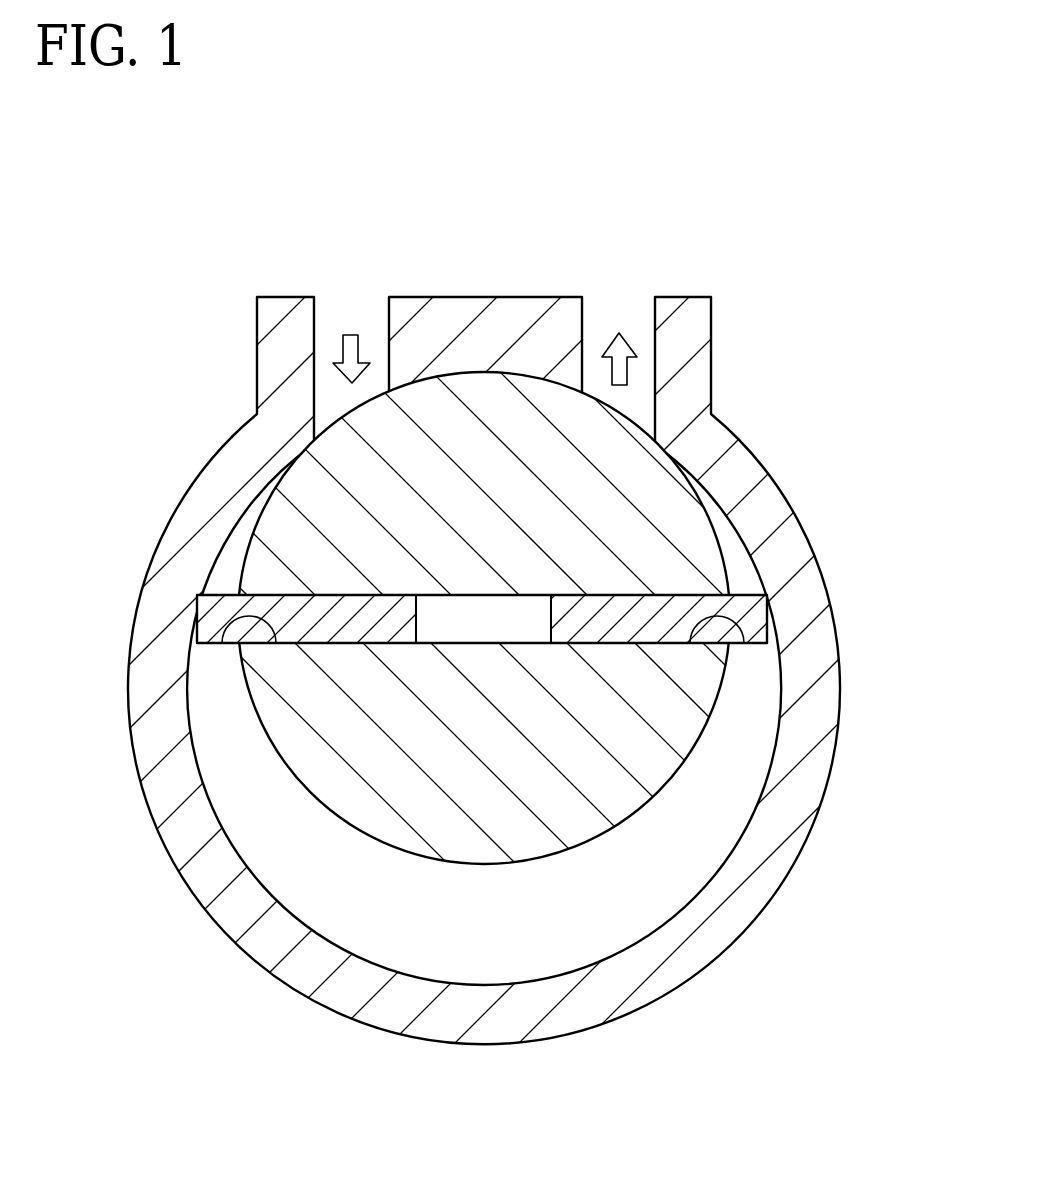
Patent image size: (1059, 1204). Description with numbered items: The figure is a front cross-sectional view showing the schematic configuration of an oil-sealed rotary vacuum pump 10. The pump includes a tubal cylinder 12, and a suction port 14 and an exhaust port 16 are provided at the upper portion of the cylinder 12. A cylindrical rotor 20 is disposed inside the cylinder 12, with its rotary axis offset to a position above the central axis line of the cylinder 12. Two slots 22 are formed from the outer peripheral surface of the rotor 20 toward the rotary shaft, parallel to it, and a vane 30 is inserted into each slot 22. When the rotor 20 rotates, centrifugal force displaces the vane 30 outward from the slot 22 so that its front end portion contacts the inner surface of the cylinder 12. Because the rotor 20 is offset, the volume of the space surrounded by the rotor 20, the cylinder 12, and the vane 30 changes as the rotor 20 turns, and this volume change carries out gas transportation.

The oil-sealed rotary vacuum pump 10 is at (733, 155).
The cylinder 12 is at (197, 882).
The suction port 14 is at (354, 282).
The exhaust port 16 is at (621, 282).
The rotor 20 is at (478, 842).
The slot 22 is at (220, 645).
The vane 30 is at (217, 622).